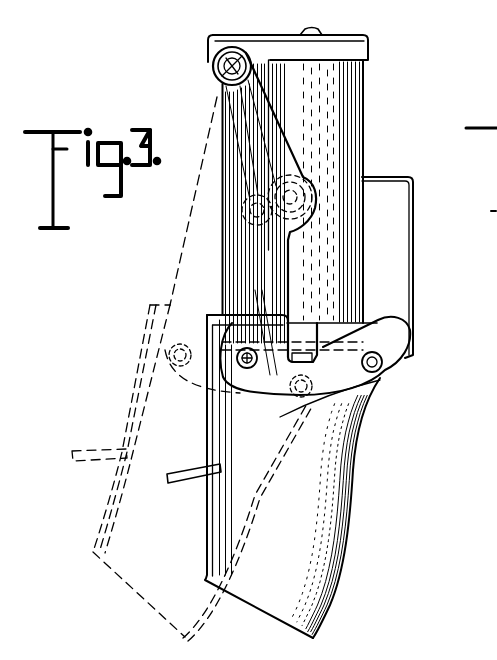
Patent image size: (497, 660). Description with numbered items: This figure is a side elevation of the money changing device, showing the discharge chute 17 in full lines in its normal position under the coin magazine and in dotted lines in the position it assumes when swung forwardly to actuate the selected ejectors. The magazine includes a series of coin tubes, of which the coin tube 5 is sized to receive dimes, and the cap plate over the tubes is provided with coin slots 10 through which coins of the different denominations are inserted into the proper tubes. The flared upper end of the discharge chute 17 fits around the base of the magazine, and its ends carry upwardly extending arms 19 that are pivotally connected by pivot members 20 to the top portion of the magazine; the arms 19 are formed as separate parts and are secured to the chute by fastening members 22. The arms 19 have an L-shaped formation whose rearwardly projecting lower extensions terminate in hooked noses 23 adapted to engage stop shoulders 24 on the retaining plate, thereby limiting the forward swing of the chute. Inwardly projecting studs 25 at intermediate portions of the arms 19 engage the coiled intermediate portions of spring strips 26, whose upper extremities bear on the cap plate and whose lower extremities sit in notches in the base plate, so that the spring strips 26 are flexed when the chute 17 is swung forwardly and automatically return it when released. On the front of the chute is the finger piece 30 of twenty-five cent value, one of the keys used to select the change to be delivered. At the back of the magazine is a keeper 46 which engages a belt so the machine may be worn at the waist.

The coin tube 5 is at (338, 108).
The coin slots 10 is at (318, 33).
The discharge chute 17 is at (355, 433).
The upwardly extending arms 19 is at (250, 165).
The pivot members 20 is at (213, 67).
The fastening members 22 is at (247, 368).
The hooked noses 23 is at (404, 325).
The stop shoulders 24 is at (300, 353).
The inwardly projecting studs 25 is at (258, 212).
The spring strips 26 is at (245, 262).
The finger piece 30 is at (205, 470).
The keeper 46 is at (414, 285).